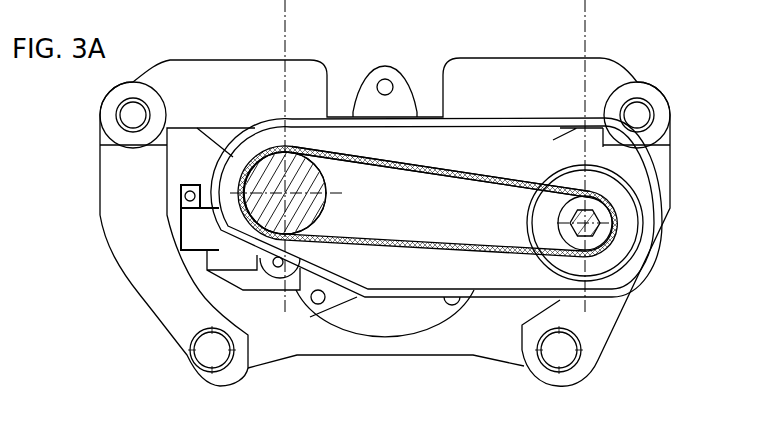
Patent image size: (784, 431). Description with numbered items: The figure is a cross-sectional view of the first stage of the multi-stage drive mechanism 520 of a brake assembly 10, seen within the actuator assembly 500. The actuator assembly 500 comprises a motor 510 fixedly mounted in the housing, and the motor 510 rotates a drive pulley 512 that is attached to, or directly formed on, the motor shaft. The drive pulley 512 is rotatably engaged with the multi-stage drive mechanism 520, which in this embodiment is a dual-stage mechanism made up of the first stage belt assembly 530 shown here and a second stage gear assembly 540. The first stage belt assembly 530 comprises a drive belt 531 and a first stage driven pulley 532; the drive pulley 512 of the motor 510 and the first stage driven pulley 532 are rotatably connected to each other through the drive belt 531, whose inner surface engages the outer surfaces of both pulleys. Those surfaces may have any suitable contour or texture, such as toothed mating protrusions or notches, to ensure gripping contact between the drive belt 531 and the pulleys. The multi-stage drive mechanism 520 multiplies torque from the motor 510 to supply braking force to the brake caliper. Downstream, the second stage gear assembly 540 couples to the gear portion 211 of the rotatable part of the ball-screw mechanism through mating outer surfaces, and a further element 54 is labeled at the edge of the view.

The brake caliper bracket assembly 10 is at (54, 137).
The gear portion 211 is at (411, 61).
The actuator assembly 500 is at (655, 181).
The motor 510 is at (660, 227).
The drive pulley 512 is at (590, 228).
The multi-stage drive mechanism 520 is at (427, 202).
The first stage belt assembly 530 is at (440, 258).
The drive belt 531 is at (480, 177).
The first stage driven pulley 532 is at (300, 184).
The second stage gear assembly 540 is at (214, 117).
The partial numeral 54 is at (777, 308).